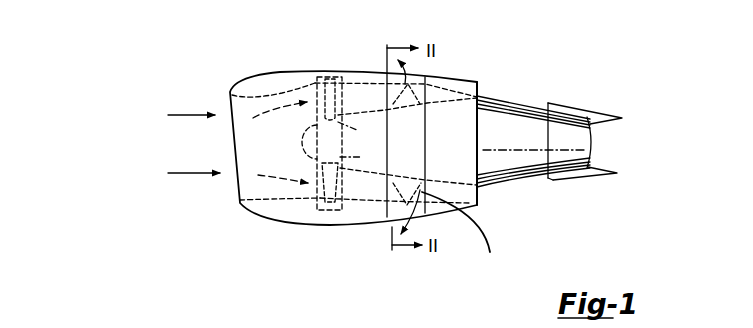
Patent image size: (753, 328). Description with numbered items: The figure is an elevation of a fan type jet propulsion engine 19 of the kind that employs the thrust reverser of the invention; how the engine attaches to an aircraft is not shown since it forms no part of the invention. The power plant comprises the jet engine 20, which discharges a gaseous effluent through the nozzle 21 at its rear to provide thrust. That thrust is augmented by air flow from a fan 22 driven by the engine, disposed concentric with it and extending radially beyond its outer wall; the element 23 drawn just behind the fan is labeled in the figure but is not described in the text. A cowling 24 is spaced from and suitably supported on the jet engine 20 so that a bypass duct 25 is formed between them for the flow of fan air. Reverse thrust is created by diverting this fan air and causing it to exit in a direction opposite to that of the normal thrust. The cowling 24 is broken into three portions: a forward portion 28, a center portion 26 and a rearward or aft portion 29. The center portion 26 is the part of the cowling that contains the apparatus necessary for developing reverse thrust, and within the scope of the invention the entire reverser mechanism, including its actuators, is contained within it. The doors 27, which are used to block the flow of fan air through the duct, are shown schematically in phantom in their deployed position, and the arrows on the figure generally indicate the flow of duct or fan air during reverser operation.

The fan type jet propulsion engine 19 is at (458, 37).
The jet engine 20 is at (505, 96).
The nozzle 21 is at (595, 158).
The fan 22 is at (332, 93).
The core engine cowl 23 is at (357, 115).
The cowling 24 is at (308, 223).
The bypass duct 25 is at (355, 188).
The center portion of cowling 26 is at (421, 213).
The doors 27 is at (467, 204).
The forward portion of cowling 28 is at (275, 213).
The aft portion of cowling 29 is at (464, 232).